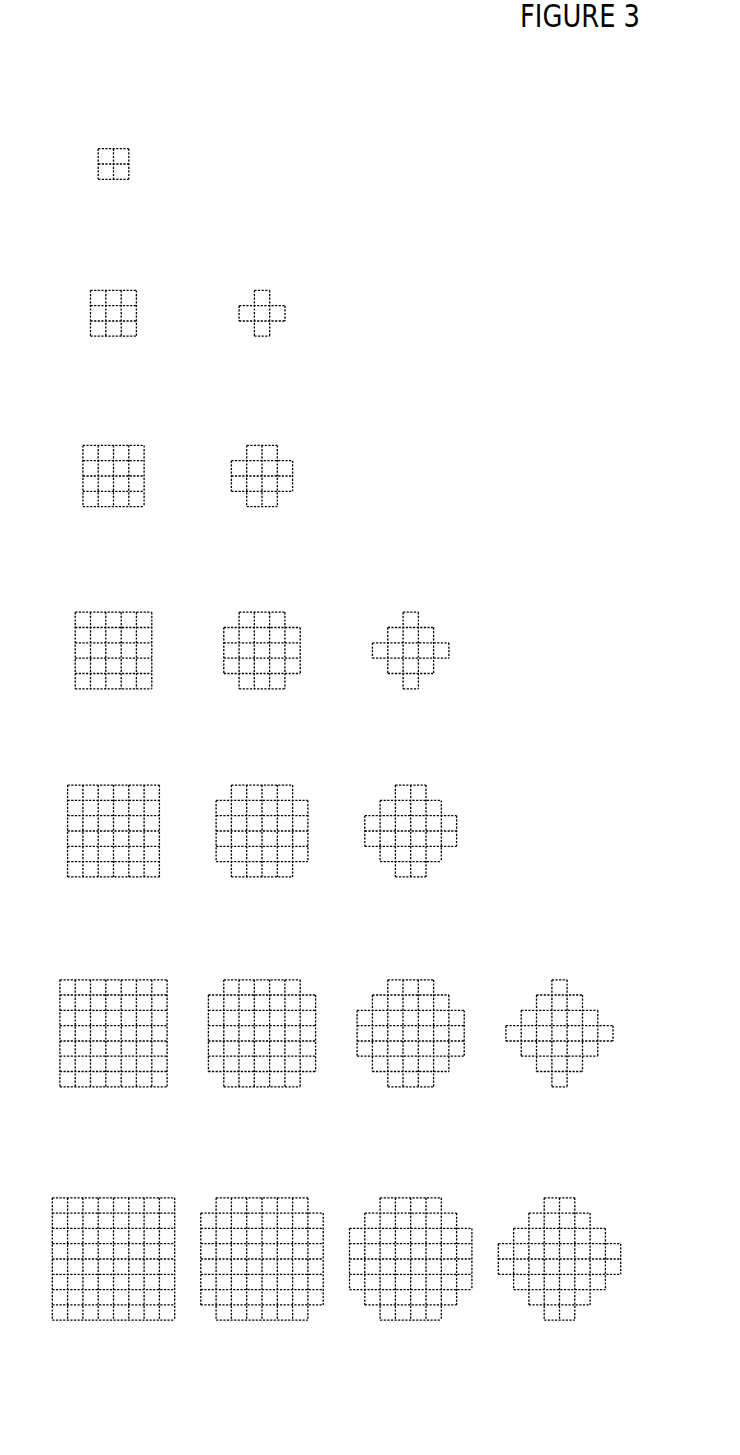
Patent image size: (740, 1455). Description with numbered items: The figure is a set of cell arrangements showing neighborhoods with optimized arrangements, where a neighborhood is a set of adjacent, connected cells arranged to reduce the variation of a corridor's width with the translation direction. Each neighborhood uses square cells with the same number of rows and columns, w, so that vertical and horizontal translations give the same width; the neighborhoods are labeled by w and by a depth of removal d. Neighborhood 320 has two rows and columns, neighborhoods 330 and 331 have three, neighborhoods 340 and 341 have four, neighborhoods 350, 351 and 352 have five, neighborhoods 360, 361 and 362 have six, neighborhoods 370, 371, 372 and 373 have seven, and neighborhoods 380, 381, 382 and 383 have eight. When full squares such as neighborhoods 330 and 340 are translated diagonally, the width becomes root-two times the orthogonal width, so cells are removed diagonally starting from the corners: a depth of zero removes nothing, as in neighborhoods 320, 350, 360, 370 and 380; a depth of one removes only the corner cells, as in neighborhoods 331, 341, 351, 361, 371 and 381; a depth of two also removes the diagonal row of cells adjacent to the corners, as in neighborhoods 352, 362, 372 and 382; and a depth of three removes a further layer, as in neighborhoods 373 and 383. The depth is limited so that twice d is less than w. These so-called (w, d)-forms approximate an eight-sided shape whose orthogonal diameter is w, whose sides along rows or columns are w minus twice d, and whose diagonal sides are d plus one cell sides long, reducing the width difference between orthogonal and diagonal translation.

The neighborhood 320 is at (96, 141).
The neighborhood 330 is at (96, 282).
The neighborhood 331 is at (245, 282).
The neighborhood 340 is at (96, 437).
The neighborhood 341 is at (245, 437).
The neighborhood 350 is at (96, 604).
The neighborhood 351 is at (245, 604).
The neighborhood 352 is at (428, 604).
The neighborhood 360 is at (96, 777).
The neighborhood 361 is at (245, 777).
The neighborhood 362 is at (428, 777).
The neighborhood 370 is at (96, 972).
The neighborhood 371 is at (245, 972).
The neighborhood 372 is at (428, 972).
The neighborhood 373 is at (542, 972).
The neighborhood 380 is at (96, 1190).
The neighborhood 381 is at (245, 1190).
The neighborhood 382 is at (428, 1190).
The neighborhood 383 is at (542, 1190).